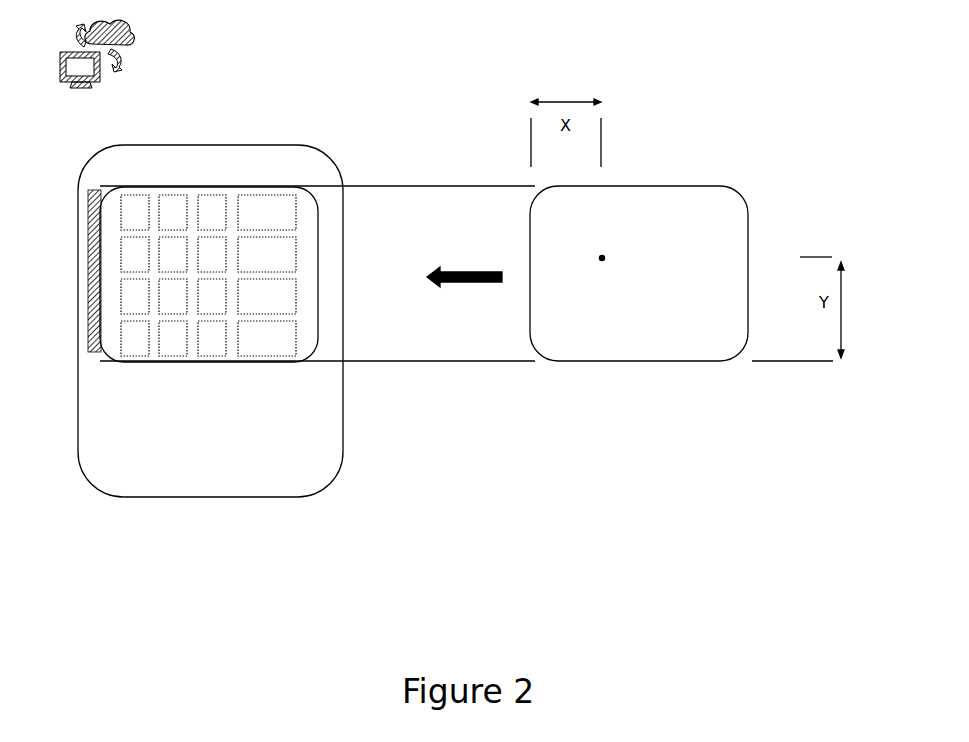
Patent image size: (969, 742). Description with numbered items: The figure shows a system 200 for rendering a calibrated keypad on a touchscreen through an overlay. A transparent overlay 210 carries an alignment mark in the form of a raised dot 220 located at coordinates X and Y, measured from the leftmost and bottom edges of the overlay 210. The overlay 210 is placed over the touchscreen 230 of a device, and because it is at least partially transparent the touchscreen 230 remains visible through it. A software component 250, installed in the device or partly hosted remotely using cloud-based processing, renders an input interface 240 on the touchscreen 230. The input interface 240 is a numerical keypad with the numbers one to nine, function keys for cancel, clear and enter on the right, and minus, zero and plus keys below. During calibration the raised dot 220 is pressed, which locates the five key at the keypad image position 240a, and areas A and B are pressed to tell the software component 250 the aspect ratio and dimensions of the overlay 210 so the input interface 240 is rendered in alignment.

The system 200 is at (668, 162).
The transparent overlay 210 is at (753, 258).
The raised dot 220 is at (605, 270).
The touchscreen 230 is at (255, 463).
The input interface 240 is at (257, 371).
The keypad image position 240a is at (188, 257).
The software component 250 is at (120, 97).